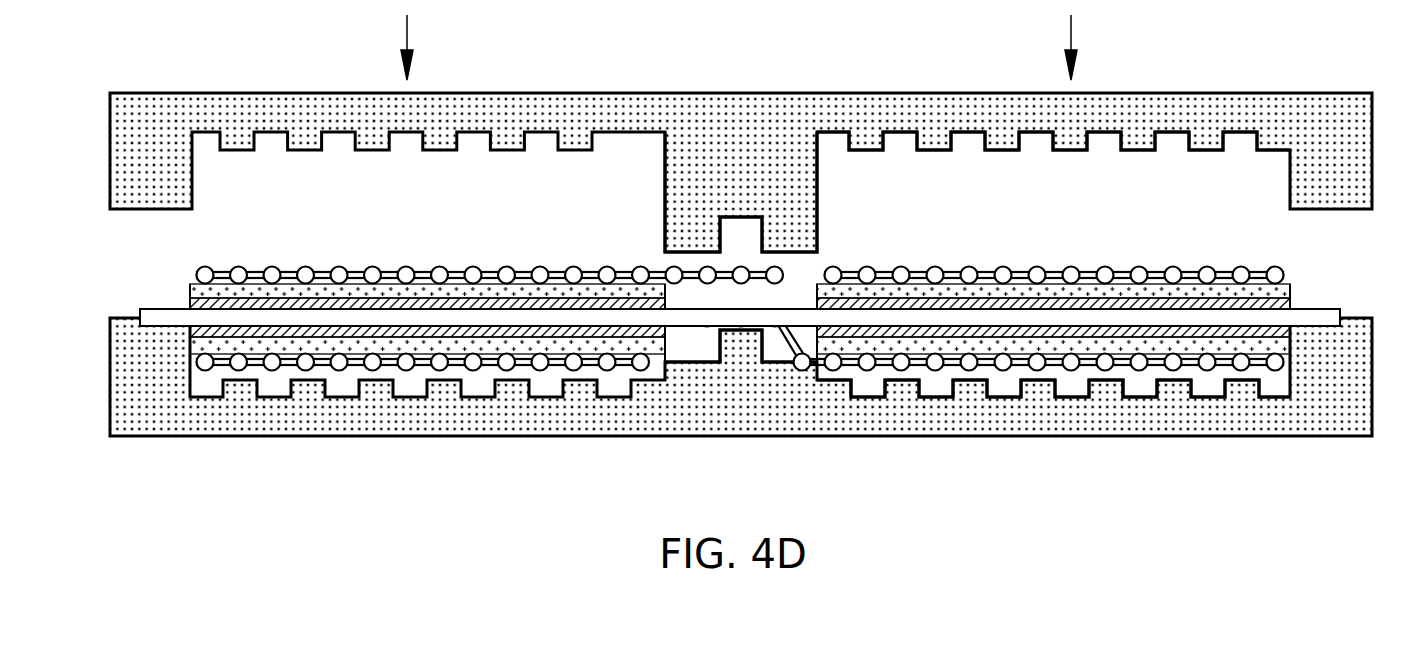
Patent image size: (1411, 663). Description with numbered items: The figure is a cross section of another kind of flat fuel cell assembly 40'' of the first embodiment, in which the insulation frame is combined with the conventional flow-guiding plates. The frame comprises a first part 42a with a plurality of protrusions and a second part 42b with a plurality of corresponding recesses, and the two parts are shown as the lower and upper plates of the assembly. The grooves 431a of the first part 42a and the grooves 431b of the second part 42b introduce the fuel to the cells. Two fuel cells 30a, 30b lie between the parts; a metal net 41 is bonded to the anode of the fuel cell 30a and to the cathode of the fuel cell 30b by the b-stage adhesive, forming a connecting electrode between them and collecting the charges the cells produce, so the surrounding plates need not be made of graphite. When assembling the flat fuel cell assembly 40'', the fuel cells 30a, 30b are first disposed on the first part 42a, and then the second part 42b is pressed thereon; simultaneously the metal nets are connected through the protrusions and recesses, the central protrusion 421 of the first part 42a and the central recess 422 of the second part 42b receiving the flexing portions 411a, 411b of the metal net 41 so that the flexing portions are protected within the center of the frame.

The flat fuel cell assembly 40'' is at (741, 259).
The second part of the insulation frame 42b is at (741, 140).
The first part of the insulation frame 42a is at (741, 404).
The grooves 431b is at (938, 145).
The grooves 431a is at (933, 388).
The recess 422 is at (739, 232).
The protrusion 421 is at (728, 320).
The fuel cell 30a is at (486, 285).
The fuel cell 30b is at (995, 340).
The metal net 41 is at (564, 277).
The flexing portion of the metal net 411a is at (626, 277).
The flexing portion of the metal net 411b is at (1074, 371).